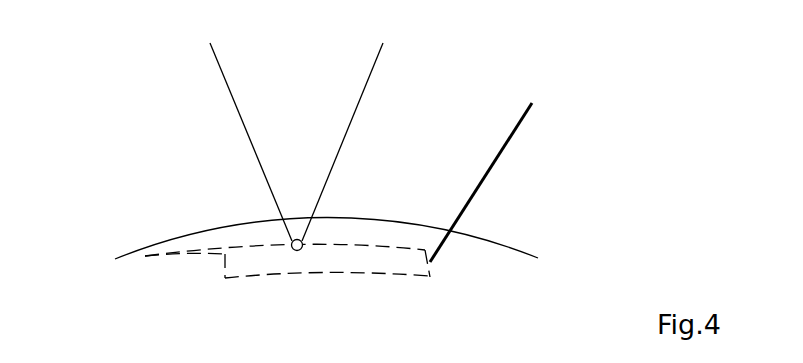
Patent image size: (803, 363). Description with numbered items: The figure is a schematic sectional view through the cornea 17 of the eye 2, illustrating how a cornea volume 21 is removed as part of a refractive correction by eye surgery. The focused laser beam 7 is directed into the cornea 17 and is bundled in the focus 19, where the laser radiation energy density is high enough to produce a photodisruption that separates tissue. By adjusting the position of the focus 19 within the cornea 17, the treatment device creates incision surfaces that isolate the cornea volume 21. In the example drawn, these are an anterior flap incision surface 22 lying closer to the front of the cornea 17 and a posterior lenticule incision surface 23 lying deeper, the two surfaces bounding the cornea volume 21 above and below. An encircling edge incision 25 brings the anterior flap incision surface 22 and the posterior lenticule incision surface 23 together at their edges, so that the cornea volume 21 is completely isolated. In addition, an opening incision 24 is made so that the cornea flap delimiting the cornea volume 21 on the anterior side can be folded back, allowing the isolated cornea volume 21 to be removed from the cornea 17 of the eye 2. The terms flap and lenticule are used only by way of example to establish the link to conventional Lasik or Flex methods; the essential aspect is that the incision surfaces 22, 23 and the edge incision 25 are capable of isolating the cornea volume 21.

The eye 2 is at (150, 153).
The focused laser beam 7 is at (360, 98).
The cornea 17 is at (482, 237).
The focus 19 is at (295, 251).
The cornea volume 21 is at (417, 268).
The anterior flap incision surface 22 is at (372, 247).
The posterior lenticule incision surface 23 is at (343, 272).
The opening incision 24 is at (185, 260).
The encircling edge incision 25 is at (507, 177).